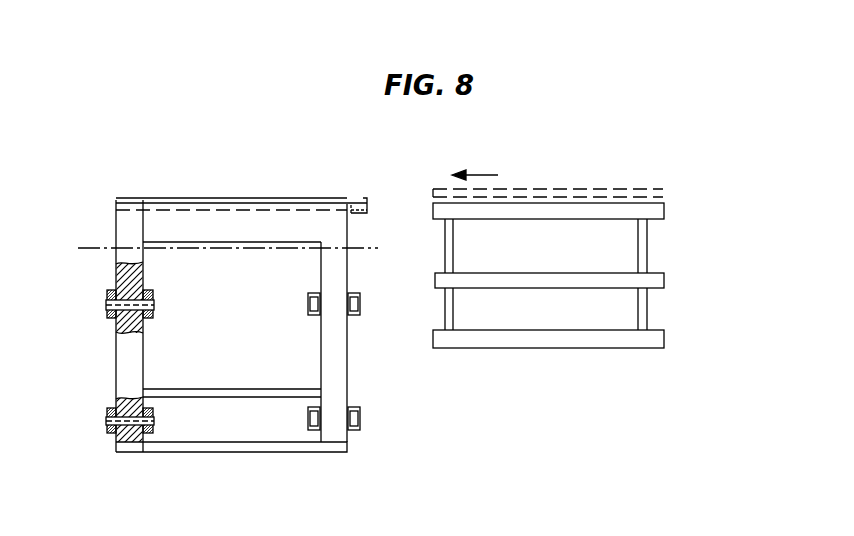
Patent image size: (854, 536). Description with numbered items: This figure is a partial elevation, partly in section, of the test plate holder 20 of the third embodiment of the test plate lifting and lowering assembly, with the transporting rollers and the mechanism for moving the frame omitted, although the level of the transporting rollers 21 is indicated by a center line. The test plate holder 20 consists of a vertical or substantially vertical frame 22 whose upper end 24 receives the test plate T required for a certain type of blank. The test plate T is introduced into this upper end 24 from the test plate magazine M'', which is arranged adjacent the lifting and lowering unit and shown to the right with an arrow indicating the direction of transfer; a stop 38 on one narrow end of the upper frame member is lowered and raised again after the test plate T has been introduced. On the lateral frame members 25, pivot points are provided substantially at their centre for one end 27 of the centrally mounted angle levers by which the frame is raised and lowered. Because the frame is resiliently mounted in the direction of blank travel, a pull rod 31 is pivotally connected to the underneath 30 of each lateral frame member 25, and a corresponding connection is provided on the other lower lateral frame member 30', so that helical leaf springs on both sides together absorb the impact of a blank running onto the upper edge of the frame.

The test plate holder 20 is at (353, 386).
The transporting rollers 21 is at (87, 247).
The frame 22 is at (253, 237).
The upper end 24 is at (182, 198).
The lateral frame members 25 is at (120, 355).
The end of angle lever 27 is at (106, 317).
The underneath of lateral frame member 30 is at (129, 450).
The other lower lateral frame member 30' is at (334, 455).
The pull rod 31 is at (107, 428).
The stop 38 is at (362, 198).
The test plate T is at (241, 198).
The test plate magazine M'' is at (548, 241).